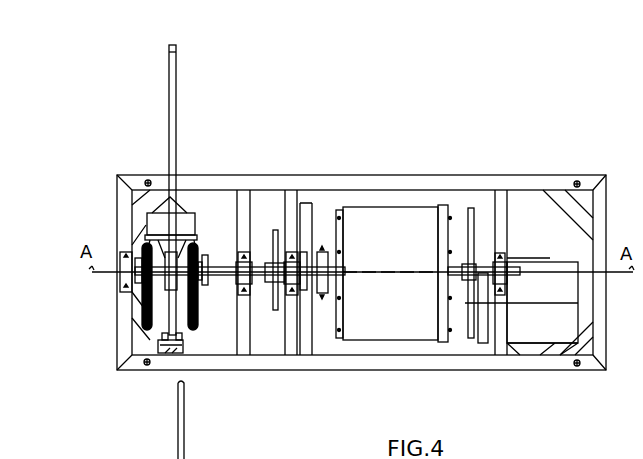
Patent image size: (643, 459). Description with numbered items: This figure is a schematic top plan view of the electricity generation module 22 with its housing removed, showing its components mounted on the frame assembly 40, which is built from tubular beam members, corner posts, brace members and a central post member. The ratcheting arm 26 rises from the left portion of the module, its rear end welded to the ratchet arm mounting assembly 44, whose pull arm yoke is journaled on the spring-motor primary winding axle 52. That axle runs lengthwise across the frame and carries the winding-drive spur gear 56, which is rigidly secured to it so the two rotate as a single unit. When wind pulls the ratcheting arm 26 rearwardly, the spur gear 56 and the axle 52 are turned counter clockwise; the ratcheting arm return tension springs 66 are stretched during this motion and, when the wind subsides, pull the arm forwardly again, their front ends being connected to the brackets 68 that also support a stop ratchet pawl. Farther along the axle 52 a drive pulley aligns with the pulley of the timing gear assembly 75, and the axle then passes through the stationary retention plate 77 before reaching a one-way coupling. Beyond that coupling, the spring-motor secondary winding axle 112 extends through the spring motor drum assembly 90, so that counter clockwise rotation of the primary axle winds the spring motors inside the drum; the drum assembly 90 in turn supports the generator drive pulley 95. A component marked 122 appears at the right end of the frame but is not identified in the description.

The electricity generation module 22 is at (404, 86).
The ratcheting arm 26 is at (177, 120).
The frame assembly 40 is at (607, 222).
The ratchet arm mounting assembly 44 is at (146, 223).
The spring-motor primary winding axle 52 is at (223, 271).
The winding-drive spur gear 56 is at (172, 320).
The tension springs 66 is at (141, 325).
The brackets 68 is at (187, 346).
The timing gear assembly 75 is at (268, 231).
The stationary retention plate 77 is at (303, 328).
The spring motor drum assembly 90 is at (393, 201).
The generator drive pulley 95 is at (487, 262).
The spring-motor secondary winding axle 112 is at (490, 270).
The control box 122 is at (557, 332).